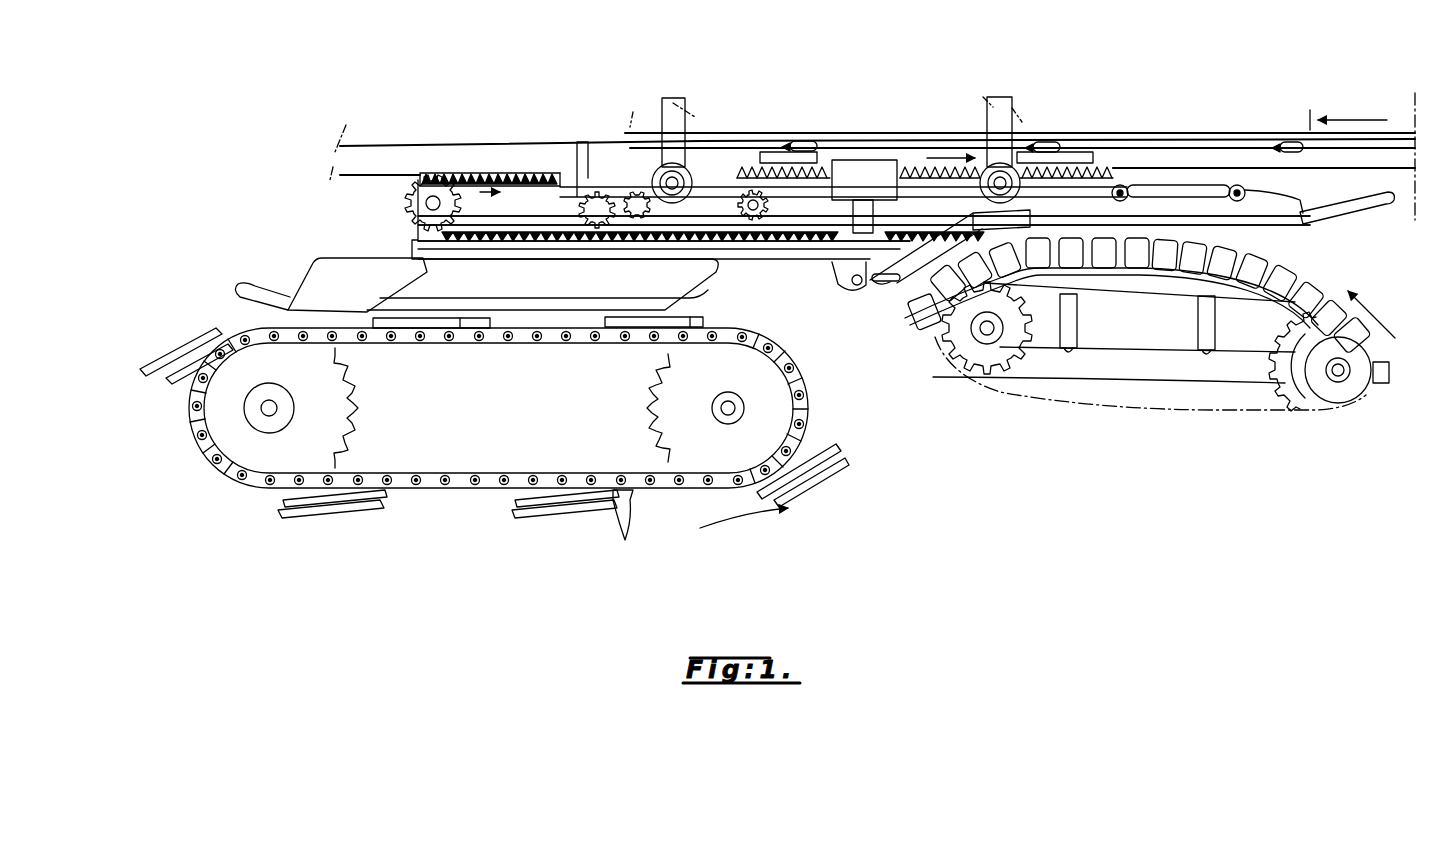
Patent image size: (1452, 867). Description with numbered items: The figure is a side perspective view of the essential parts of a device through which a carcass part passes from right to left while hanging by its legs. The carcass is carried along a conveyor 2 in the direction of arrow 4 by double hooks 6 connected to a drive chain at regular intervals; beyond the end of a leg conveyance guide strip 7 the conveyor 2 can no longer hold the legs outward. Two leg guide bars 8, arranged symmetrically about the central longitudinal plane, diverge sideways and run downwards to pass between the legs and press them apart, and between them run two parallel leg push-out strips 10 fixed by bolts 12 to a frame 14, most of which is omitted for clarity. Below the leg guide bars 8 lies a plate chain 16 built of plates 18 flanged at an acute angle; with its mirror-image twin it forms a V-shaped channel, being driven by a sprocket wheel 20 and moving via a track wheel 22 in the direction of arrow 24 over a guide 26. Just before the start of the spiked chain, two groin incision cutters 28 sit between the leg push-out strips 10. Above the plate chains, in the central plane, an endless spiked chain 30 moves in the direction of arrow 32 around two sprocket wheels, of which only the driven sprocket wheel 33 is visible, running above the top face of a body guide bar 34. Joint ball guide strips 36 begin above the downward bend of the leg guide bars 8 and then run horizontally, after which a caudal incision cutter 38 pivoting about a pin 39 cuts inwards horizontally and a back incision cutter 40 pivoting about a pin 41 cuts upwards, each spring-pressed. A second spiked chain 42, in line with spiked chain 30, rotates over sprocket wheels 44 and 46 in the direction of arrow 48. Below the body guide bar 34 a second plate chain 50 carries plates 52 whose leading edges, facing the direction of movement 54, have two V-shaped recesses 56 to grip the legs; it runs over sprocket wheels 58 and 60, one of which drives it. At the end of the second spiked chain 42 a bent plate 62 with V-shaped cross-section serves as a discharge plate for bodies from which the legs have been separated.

The conveyor 2 is at (1147, 121).
The arrow 4 is at (1355, 120).
The double hooks 6 is at (807, 142).
The leg conveyance guide strip 7 is at (1317, 160).
The leg guide bars 8 is at (1363, 190).
The leg push-out strips 10 is at (1323, 222).
The bolts 12 is at (1237, 185).
The frame 14 is at (425, 157).
The plate chain 16 is at (1228, 412).
The plates 18 is at (923, 318).
The sprocket wheel 20 is at (992, 360).
The track wheel 22 is at (1283, 337).
The arrow 24 is at (1380, 320).
The guide 26 is at (1104, 296).
The groin incision cutters 28 is at (1137, 220).
The spiked chain 30 is at (908, 167).
The arrow 32 is at (960, 150).
The sprocket wheel 33 is at (740, 203).
The body guide bar 34 is at (897, 268).
The joint ball guide strips 36 is at (750, 243).
The caudal incision cutter 38 is at (830, 243).
The pin 39 is at (863, 210).
The back incision cutter 40 is at (835, 267).
The pin 41 is at (857, 288).
The second spiked chain 42 is at (407, 197).
The sprocket wheel 44 is at (583, 203).
The sprocket wheel 46 is at (447, 195).
The arrow 48 is at (477, 180).
The second plate chain 50 is at (477, 484).
The plates 52 is at (193, 343).
The direction of movement 54 is at (737, 527).
The V-shaped recesses 56 is at (617, 495).
The sprocket wheel 58 is at (672, 388).
The sprocket wheel 60 is at (247, 442).
The bent plate 62 is at (317, 280).